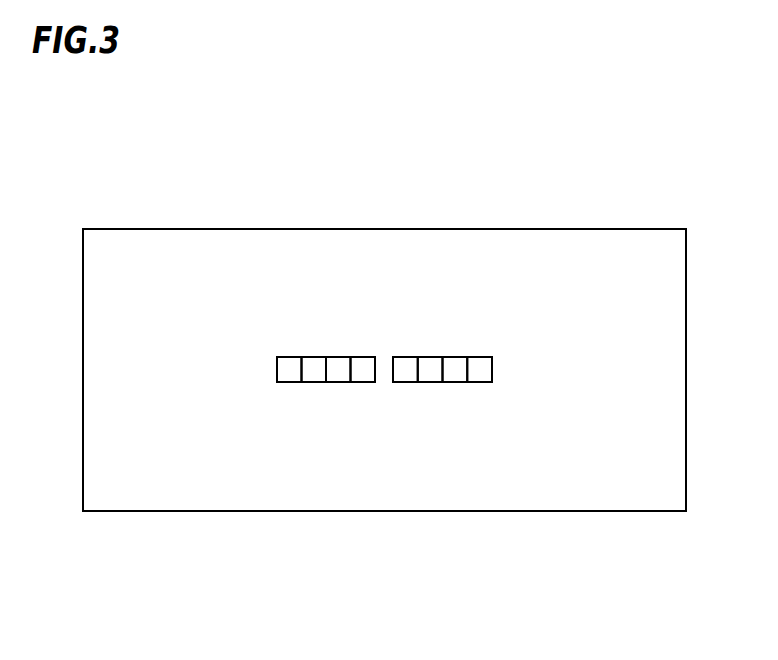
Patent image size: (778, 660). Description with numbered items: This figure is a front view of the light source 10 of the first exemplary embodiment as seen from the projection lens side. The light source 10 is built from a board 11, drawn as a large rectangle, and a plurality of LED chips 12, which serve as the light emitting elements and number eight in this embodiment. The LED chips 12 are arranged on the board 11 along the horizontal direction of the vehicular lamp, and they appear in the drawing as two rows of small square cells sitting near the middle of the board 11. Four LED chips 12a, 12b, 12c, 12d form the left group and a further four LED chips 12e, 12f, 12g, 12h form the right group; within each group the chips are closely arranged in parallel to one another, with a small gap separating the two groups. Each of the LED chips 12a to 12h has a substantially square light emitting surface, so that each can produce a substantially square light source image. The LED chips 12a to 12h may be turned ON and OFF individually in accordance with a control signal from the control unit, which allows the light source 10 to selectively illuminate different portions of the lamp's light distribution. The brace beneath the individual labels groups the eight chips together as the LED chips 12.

The light source 10 is at (408, 174).
The board 11 is at (535, 229).
The LED chips 12 is at (568, 555).
The LED chip 12a is at (286, 383).
The LED chip 12b is at (315, 383).
The LED chip 12c is at (340, 383).
The LED chip 12d is at (366, 383).
The LED chip 12e is at (407, 383).
The LED chip 12f is at (433, 383).
The LED chip 12g is at (457, 383).
The LED chip 12h is at (481, 383).